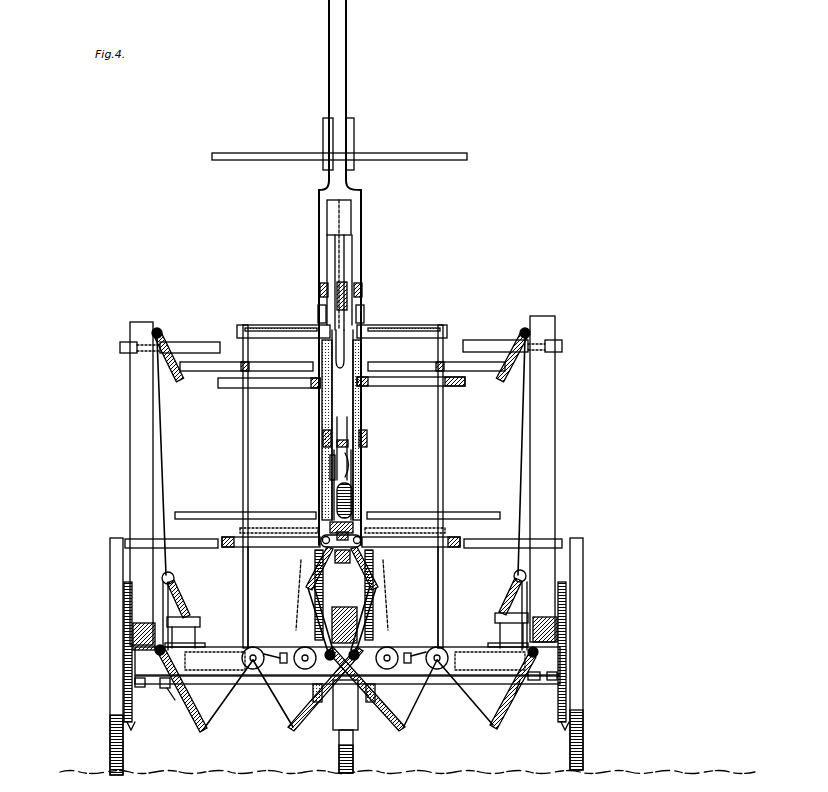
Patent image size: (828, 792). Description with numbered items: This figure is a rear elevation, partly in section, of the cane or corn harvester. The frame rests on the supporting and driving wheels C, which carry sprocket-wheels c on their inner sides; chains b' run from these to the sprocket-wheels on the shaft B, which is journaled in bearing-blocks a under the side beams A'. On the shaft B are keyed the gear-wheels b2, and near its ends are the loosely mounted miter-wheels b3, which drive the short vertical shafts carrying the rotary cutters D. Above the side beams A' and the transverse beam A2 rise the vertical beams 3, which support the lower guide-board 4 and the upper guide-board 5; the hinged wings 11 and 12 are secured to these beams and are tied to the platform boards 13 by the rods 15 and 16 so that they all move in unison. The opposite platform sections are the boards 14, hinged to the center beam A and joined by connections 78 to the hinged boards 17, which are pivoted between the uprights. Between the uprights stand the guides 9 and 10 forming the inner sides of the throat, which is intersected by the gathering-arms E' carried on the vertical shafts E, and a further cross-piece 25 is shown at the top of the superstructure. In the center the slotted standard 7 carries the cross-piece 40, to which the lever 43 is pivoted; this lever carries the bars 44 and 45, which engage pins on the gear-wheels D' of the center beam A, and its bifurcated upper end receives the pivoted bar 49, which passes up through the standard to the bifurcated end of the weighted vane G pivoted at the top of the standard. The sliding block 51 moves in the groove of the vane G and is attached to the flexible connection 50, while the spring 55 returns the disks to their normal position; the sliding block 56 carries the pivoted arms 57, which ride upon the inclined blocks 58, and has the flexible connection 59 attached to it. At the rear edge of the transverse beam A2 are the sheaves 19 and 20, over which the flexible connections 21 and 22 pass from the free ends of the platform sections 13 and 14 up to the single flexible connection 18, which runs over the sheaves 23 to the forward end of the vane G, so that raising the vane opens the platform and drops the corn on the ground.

The pivoted arm or vane G is at (340, 34).
The sliding block 51 is at (354, 135).
The flexible connection 50 is at (345, 218).
The pivoted bar 49 is at (336, 287).
The grooved rollers or sheaves 23 is at (317, 311).
The cross bars 25 is at (270, 333).
The flexible connection 59 is at (400, 528).
The vertical shafts E is at (341, 486).
The gathering-arms E' is at (340, 432).
The guide-boards or frames 10 is at (228, 388).
The upright or standard 7 is at (320, 396).
The lever 43 is at (344, 368).
The vertical beam 3 is at (342, 480).
The guide-board 5 is at (119, 347).
The hinged boards or wings 11 is at (168, 350).
The rods 15 is at (162, 465).
The longitudinal cross-piece 40 is at (323, 438).
The flexible connection 18 is at (333, 462).
The bar 44 is at (330, 483).
The bar 45 is at (355, 483).
The spring 55 is at (352, 500).
The horizontal guide-board 4 is at (192, 548).
The pivoted arms 57 is at (230, 548).
The guide-boards or frames 9 is at (268, 548).
The sliding block 56 is at (341, 549).
The inclined blocks 58 is at (318, 556).
The hinged boards 17 is at (302, 601).
The gear-wheels D' is at (343, 595).
The connections 78 is at (314, 632).
The hinged boards or wings 12 is at (180, 598).
The rods 16 is at (200, 633).
The side beams A' is at (341, 633).
The sprocket-wheels c is at (124, 604).
The outer post C' is at (344, 656).
The transverse beam A2 is at (347, 665).
The center beam A is at (341, 662).
The shaft B is at (541, 663).
The rotary cutters D is at (328, 647).
The grooved rollers or sheaves 19 is at (253, 669).
The grooved rollers or sheaves 20 is at (305, 669).
The flexible connections 21 is at (348, 695).
The flexible connections 22 is at (345, 694).
The hinged boards 13 is at (346, 694).
The boards 14 is at (347, 699).
The gear-wheels b2 is at (329, 701).
The bearing-blocks a is at (346, 688).
The miter-wheels b3 is at (338, 699).
The chains b' is at (341, 728).
The supporting and driving wheels C is at (345, 726).